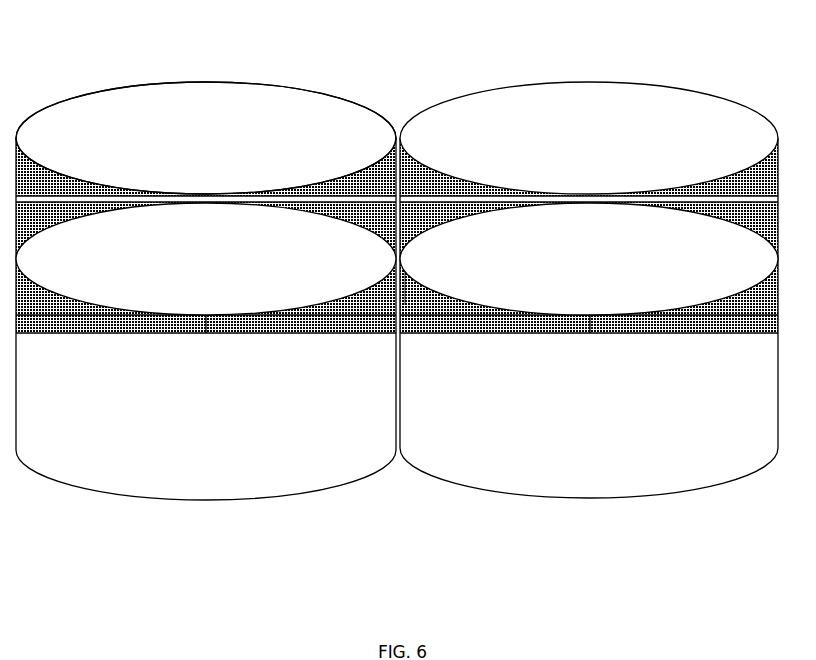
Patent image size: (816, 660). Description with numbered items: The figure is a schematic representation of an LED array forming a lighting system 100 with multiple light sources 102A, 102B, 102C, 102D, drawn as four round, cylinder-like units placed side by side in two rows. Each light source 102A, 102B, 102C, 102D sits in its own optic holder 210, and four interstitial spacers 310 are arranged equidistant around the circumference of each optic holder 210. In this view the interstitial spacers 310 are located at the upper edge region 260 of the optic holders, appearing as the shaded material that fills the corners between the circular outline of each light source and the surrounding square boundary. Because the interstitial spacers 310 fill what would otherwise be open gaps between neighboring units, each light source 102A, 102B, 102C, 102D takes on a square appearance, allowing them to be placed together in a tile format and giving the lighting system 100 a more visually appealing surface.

The lighting system 100 is at (657, 517).
The optic holder 210 is at (205, 453).
The upper edge region 260 is at (378, 130).
The interstitial spacers 310 is at (358, 304).
The light source 102A is at (206, 138).
The light source 102B is at (589, 138).
The light source 102C is at (206, 259).
The light source 102D is at (589, 259).